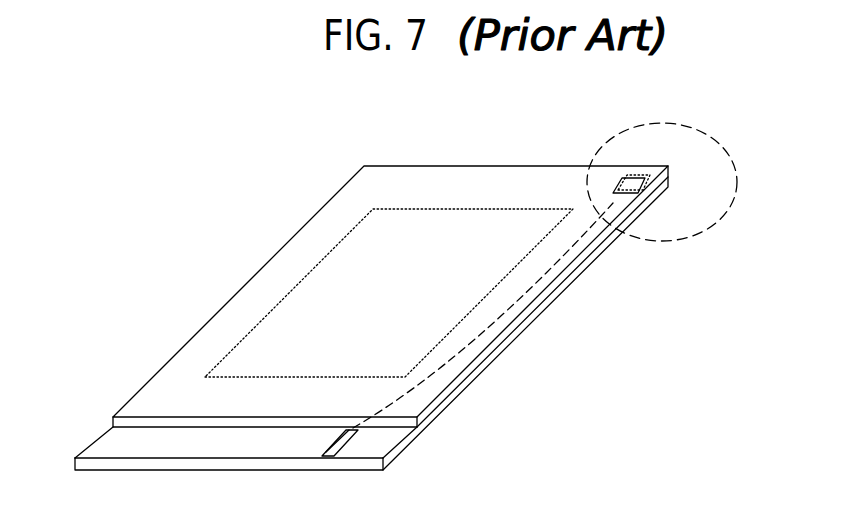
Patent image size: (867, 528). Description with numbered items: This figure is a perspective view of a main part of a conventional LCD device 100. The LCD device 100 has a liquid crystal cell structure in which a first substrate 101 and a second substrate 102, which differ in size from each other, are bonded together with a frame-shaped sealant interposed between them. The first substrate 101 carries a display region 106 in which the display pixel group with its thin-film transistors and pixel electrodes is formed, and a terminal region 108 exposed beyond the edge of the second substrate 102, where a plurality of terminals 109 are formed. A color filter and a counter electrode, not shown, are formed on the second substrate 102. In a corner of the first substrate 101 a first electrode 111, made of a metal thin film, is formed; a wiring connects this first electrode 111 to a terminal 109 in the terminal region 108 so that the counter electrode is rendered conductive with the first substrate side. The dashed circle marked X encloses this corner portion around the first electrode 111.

The LCD device 100 is at (213, 139).
The first substrate 101 is at (105, 448).
The second substrate 102 is at (148, 398).
The display region 106 is at (348, 248).
The terminal region 108 is at (245, 447).
The terminal 109 is at (336, 448).
The first electrode 111 is at (621, 183).
The enlarged portion X is at (670, 242).